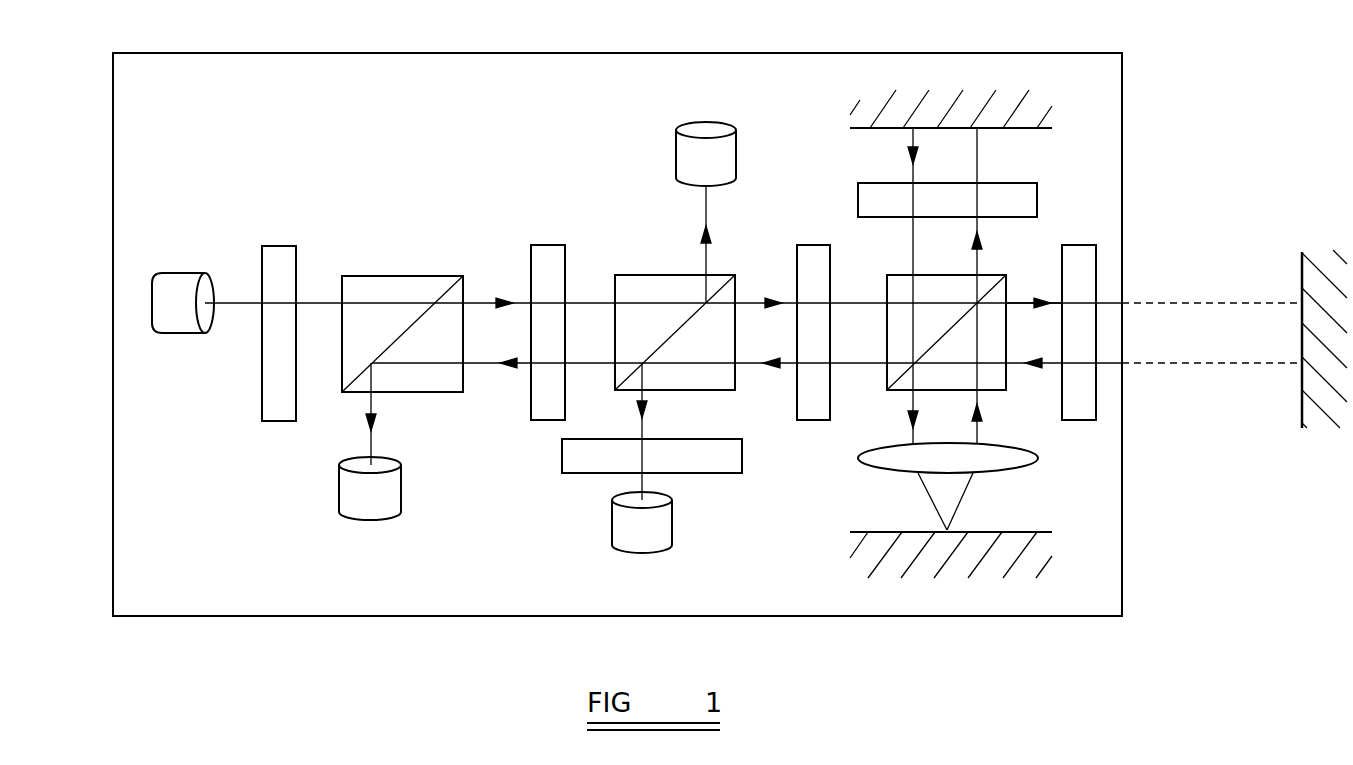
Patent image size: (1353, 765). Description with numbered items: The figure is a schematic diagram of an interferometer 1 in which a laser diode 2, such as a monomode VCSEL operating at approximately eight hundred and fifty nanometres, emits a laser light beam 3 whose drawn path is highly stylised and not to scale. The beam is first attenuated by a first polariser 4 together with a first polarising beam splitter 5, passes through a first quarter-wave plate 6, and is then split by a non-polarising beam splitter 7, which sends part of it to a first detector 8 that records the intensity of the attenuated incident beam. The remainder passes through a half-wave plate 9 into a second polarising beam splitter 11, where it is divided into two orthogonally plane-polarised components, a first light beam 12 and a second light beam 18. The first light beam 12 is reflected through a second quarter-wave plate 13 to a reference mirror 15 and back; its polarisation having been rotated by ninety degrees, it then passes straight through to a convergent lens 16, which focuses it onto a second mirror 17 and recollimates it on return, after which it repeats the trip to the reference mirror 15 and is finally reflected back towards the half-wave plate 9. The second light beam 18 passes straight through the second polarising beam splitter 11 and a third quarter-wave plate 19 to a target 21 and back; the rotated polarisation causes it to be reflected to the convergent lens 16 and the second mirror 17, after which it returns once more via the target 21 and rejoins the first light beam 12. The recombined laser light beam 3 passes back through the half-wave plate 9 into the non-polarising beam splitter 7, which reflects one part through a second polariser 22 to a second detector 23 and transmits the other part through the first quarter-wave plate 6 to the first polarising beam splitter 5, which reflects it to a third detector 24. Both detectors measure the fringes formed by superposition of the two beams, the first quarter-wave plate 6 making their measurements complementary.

The interferometer 1 is at (1126, 110).
The laser diode 2 is at (182, 272).
The laser light beam 3 is at (236, 314).
The first polariser 4 is at (287, 245).
The first polarising beam splitter 5 is at (404, 275).
The first quarter-wave plate 6 is at (544, 245).
The non-polarising beam splitter 7 is at (658, 274).
The first detector 8 is at (740, 157).
The half-wave plate 9 is at (812, 244).
The second polarising beam splitter 11 is at (880, 387).
The first light beam 12 is at (982, 224).
The second quarter-wave plate 13 is at (1011, 182).
The reference mirror 15 is at (877, 131).
The convergent lens 16 is at (877, 471).
The second mirror 17 is at (877, 530).
The second light beam 18 is at (1051, 299).
The third quarter-wave plate 19 is at (1081, 244).
The target 21 is at (1299, 390).
The second polariser 22 is at (560, 452).
The second detector 23 is at (610, 525).
The third detector 24 is at (337, 488).